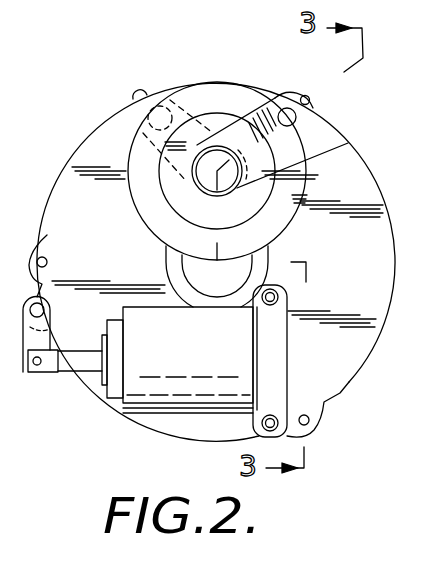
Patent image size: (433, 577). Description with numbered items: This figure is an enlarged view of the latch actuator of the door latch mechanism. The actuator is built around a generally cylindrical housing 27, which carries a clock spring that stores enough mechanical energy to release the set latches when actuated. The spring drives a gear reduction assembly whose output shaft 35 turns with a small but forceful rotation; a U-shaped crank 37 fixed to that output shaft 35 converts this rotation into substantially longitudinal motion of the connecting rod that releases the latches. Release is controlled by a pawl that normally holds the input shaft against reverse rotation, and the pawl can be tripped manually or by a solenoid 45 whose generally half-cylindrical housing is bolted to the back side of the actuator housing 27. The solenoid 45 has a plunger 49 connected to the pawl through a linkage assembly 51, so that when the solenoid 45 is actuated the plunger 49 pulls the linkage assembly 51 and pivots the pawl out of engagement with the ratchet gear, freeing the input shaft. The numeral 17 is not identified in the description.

The housing 17 is at (342, 124).
The U-shaped crank 37 is at (348, 143).
The output shaft 35 is at (237, 190).
The solenoid 45 is at (158, 392).
The housing 27 is at (342, 396).
The linkage assembly 51 is at (50, 333).
The plunger 49 is at (80, 374).